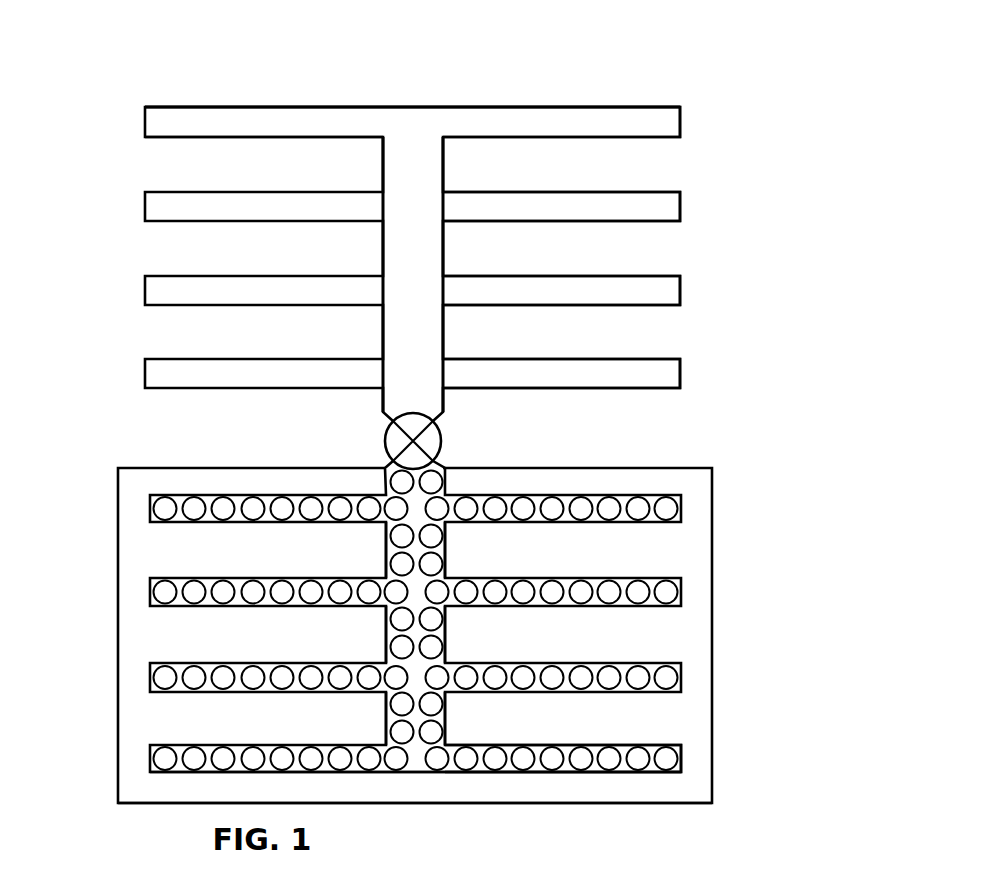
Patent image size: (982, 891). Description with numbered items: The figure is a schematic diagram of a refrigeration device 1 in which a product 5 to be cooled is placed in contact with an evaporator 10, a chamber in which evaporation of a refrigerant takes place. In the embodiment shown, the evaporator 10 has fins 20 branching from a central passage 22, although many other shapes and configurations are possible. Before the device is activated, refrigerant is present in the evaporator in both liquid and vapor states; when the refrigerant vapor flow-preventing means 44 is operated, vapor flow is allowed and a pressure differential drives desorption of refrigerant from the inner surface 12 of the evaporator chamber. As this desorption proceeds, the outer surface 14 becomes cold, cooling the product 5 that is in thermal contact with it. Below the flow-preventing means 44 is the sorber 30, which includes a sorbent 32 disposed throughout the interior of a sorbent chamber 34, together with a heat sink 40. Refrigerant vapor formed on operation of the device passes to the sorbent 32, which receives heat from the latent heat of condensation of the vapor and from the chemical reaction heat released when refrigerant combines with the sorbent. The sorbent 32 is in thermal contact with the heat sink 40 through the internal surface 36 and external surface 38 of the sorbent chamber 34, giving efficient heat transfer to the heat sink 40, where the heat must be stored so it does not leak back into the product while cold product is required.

The refrigeration device 1 is at (140, 77).
The product 5 is at (398, 60).
The evaporator 10 is at (113, 101).
The inner surface 12 is at (617, 108).
The outer surface 14 is at (603, 107).
The fins 20 is at (680, 221).
The central passage 22 is at (415, 334).
The sorber 30 is at (397, 655).
The sorbent 32 is at (638, 509).
The sorbent chamber 34 is at (417, 750).
The internal surface 36 is at (680, 763).
The external surface 38 is at (647, 770).
The heat sink 40 is at (592, 630).
The refrigerant vapor flow-preventing means 44 is at (442, 441).